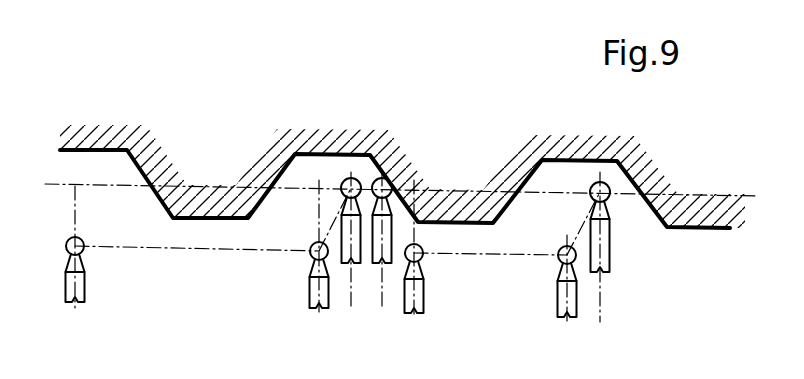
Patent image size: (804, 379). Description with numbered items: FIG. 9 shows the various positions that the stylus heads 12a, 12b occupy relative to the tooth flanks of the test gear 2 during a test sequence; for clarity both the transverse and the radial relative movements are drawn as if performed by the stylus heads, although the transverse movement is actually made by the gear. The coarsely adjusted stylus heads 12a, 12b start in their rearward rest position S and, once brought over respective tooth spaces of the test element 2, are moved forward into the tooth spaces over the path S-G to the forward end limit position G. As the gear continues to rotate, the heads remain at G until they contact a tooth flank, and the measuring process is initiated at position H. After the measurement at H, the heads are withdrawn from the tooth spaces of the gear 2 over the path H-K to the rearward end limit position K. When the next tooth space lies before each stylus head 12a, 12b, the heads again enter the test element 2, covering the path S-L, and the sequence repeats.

The test gear 2 is at (468, 157).
The stylus head 12a is at (287, 262).
The stylus head 12b is at (85, 280).
The rearward rest position S is at (310, 282).
The forward end limit position G is at (342, 258).
The measuring position H is at (385, 258).
The rearward end limit position K is at (418, 262).
The tooth space entry position L is at (584, 260).